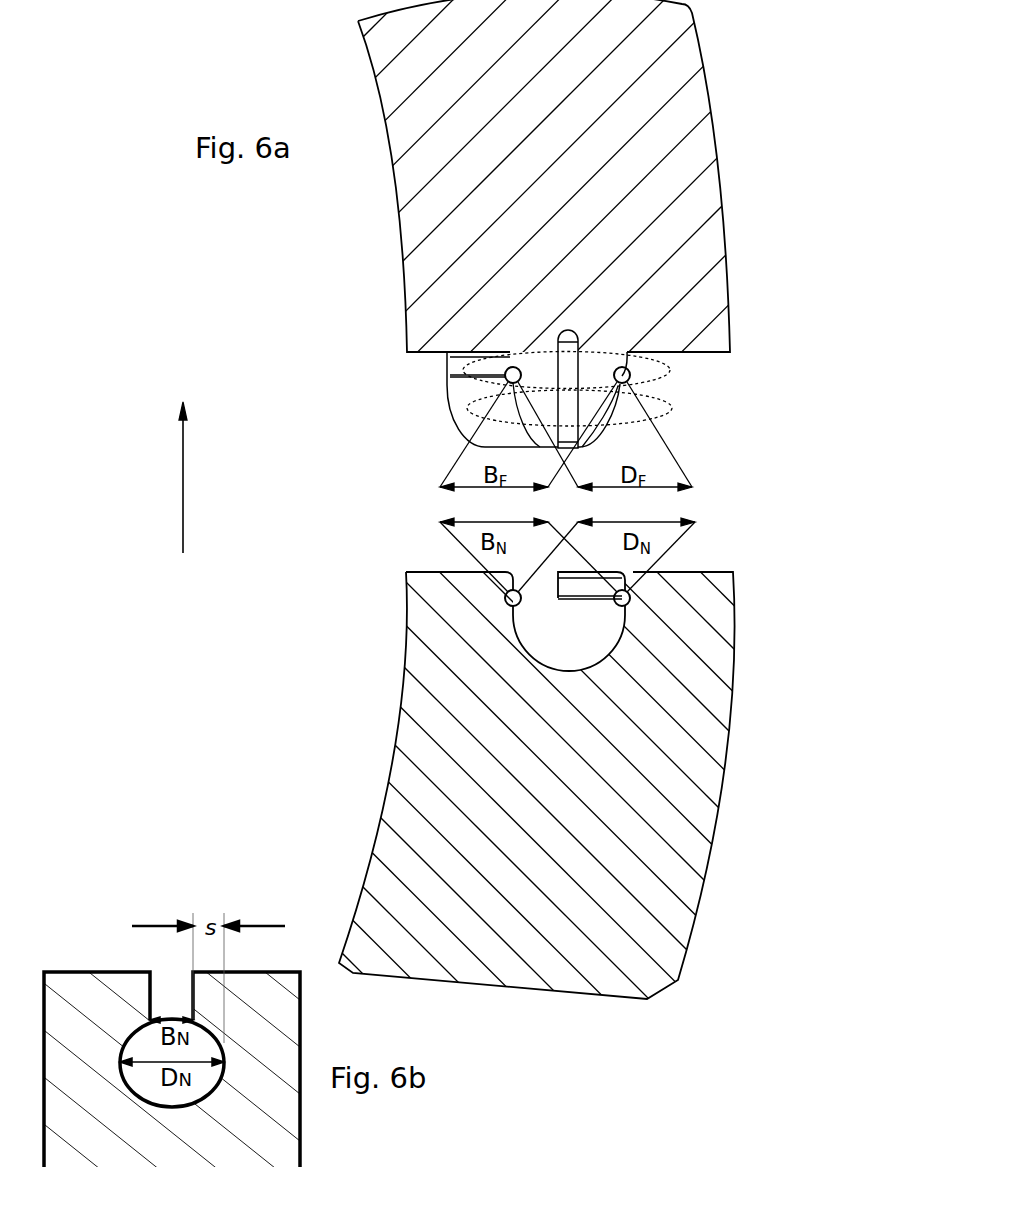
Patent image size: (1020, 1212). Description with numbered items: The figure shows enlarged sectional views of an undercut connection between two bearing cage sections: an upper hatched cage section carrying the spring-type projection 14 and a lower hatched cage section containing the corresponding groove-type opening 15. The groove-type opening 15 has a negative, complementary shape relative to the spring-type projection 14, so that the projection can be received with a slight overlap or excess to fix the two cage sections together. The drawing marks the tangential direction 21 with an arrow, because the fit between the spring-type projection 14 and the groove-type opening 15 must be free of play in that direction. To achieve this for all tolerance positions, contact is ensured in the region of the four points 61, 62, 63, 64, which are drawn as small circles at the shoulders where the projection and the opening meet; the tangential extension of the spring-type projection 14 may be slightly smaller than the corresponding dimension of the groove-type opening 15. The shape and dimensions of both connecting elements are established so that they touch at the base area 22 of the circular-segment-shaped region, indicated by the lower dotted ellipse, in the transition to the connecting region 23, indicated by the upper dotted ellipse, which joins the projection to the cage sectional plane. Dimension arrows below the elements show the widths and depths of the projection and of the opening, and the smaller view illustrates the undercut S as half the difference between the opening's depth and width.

The spring-type projection 14 is at (588, 385).
The groove-type opening 15 is at (597, 651).
The tangential direction 21 is at (183, 485).
The base area 22 is at (670, 412).
The connecting region 23 is at (660, 363).
The contact point 61 is at (505, 376).
The contact point 62 is at (505, 596).
The contact point 63 is at (630, 380).
The contact point 64 is at (629, 596).